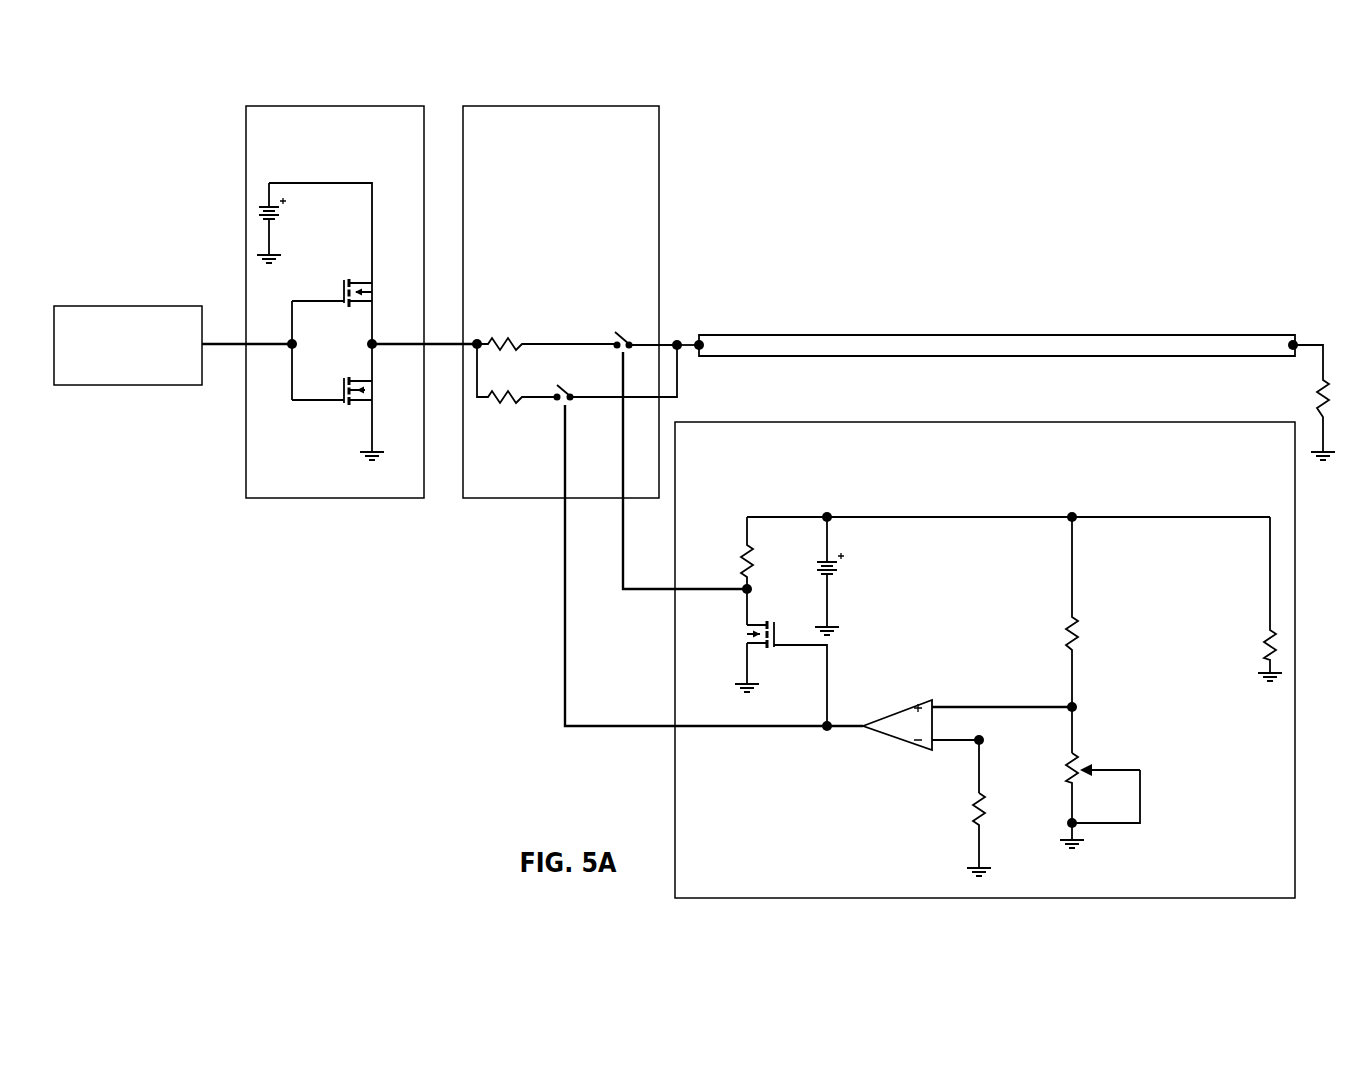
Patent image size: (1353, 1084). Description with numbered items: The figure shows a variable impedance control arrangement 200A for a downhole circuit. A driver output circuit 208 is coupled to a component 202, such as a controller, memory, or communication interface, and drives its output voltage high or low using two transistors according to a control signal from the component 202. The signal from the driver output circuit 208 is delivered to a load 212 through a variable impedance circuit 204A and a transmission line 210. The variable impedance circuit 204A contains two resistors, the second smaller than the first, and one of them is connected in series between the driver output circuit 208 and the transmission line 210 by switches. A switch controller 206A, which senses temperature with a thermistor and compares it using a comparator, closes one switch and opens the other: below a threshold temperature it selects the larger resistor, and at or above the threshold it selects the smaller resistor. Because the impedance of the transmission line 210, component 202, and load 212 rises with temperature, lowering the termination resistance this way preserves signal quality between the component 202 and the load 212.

The variable impedance control arrangement 200A is at (331, 613).
The component 202 is at (111, 370).
The variable impedance circuit 204A is at (538, 197).
The switch controller 206A is at (962, 484).
The driver output circuit 208 is at (244, 165).
The transmission line 210 is at (950, 333).
The load 212 is at (1299, 400).